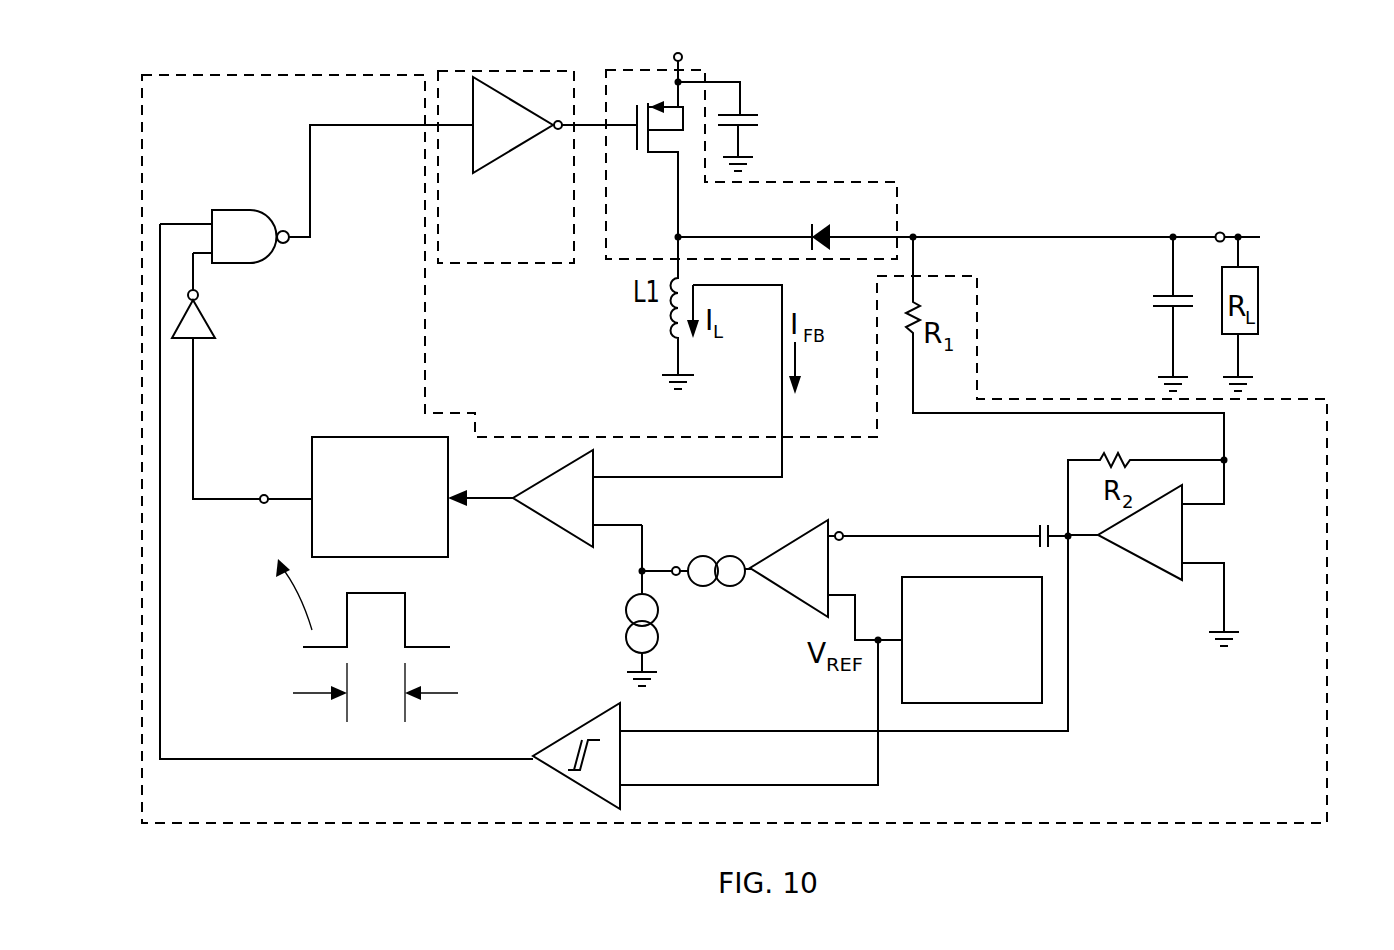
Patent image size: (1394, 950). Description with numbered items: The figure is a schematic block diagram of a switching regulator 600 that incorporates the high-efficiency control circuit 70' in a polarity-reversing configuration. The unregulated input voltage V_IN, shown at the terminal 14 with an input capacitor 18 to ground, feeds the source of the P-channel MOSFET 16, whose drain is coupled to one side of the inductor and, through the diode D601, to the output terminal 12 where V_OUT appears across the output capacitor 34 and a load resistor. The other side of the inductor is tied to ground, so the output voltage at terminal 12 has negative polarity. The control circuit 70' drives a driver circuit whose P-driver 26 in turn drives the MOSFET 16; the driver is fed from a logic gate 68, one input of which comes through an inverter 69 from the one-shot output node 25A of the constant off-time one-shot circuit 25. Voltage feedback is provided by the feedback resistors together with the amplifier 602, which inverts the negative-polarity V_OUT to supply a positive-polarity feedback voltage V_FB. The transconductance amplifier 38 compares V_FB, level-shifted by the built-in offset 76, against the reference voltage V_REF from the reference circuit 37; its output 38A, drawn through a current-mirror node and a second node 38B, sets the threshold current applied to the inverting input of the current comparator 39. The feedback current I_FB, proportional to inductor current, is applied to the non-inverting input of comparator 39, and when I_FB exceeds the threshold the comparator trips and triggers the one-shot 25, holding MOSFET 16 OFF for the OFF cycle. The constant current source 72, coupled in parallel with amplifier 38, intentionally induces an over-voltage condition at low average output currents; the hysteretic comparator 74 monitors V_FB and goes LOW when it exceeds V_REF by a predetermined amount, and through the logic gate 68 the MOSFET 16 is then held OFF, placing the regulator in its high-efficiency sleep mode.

The control circuit 70' is at (763, 449).
The switching regulator 600 is at (845, 168).
The NAND gate 68 is at (231, 210).
The inverter 69 is at (207, 318).
The one-shot output node 25A is at (262, 503).
The one-shot circuit 25 is at (375, 557).
The P-channel driver 26 is at (498, 160).
The P-channel MOSFET 16 is at (668, 153).
The load 14 is at (682, 56).
The input capacitor CIN 18 is at (747, 114).
The diode D601 is at (822, 222).
The amplifier 602 is at (1140, 560).
The offset 76 is at (1033, 528).
The transconductance amplifier 38 is at (790, 542).
The amplifier output node 38B is at (843, 532).
The output of transconductance amplifier 38A is at (678, 567).
The reference circuit 37 is at (986, 577).
The current comparator 39 is at (565, 532).
The constant current source 72 is at (659, 638).
The hysteretic comparator 74 is at (573, 733).
The output terminal 12 is at (1220, 232).
The output capacitor 34 is at (1165, 296).